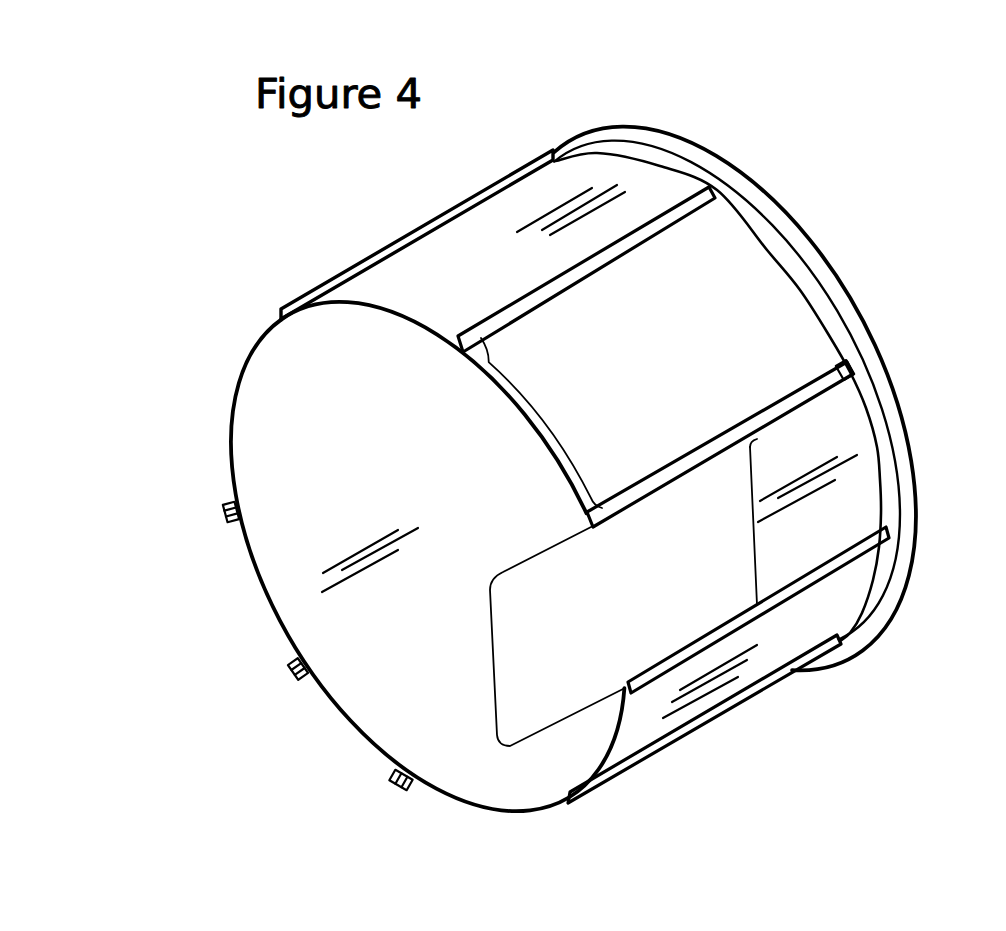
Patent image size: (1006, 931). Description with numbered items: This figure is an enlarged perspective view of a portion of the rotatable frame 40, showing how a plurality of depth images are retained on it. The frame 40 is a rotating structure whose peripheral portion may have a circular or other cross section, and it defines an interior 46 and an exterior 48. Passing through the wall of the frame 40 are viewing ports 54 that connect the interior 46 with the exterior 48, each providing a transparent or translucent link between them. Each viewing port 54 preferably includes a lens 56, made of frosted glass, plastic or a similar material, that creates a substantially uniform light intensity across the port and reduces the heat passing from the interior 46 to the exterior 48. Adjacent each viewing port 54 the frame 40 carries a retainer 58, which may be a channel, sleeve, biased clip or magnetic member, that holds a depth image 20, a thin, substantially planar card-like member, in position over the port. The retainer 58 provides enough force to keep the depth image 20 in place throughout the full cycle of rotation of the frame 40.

The depth image 20 is at (707, 316).
The rotatable frame 40 is at (602, 128).
The interior 46 is at (322, 450).
The exterior 48 is at (215, 291).
The viewing port 54 is at (575, 518).
The lens 56 is at (350, 313).
The retainer 58 is at (822, 364).